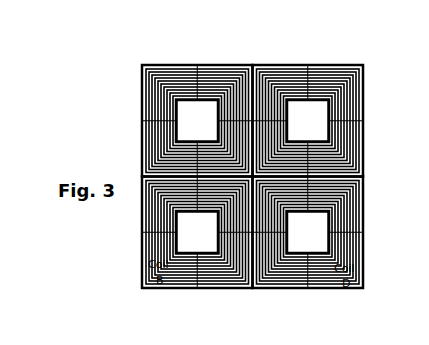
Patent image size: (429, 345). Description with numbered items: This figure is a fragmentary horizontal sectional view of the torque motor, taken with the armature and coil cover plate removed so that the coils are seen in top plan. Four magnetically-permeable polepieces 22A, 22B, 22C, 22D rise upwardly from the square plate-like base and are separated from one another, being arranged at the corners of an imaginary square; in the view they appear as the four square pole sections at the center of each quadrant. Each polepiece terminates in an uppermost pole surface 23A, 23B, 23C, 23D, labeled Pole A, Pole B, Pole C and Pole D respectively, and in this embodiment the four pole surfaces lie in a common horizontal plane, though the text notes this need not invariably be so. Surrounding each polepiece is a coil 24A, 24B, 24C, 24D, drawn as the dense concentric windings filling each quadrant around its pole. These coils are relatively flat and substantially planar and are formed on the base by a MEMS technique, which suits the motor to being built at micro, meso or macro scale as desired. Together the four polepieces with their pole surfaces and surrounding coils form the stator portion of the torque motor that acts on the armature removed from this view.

The polepiece 22A is at (169, 102).
The pole surface 23A is at (171, 121).
The coil 24A is at (176, 56).
The polepiece 22B is at (172, 239).
The pole surface 23B is at (170, 227).
The coil 24B is at (176, 279).
The polepiece 22C is at (321, 102).
The pole surface 23C is at (320, 122).
The coil 24C is at (316, 56).
The polepiece 22D is at (321, 238).
The pole surface 23D is at (321, 226).
The coil 24D is at (313, 282).